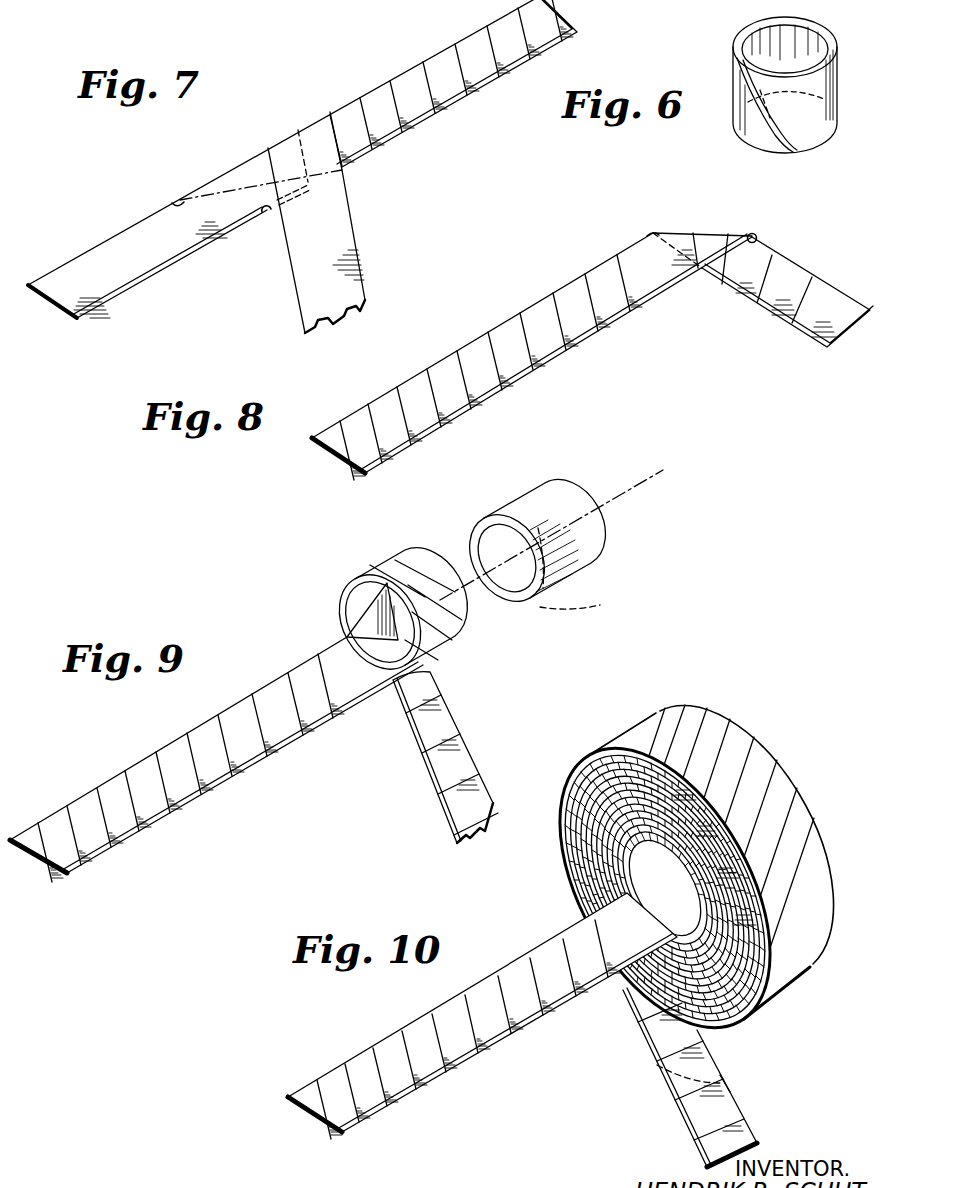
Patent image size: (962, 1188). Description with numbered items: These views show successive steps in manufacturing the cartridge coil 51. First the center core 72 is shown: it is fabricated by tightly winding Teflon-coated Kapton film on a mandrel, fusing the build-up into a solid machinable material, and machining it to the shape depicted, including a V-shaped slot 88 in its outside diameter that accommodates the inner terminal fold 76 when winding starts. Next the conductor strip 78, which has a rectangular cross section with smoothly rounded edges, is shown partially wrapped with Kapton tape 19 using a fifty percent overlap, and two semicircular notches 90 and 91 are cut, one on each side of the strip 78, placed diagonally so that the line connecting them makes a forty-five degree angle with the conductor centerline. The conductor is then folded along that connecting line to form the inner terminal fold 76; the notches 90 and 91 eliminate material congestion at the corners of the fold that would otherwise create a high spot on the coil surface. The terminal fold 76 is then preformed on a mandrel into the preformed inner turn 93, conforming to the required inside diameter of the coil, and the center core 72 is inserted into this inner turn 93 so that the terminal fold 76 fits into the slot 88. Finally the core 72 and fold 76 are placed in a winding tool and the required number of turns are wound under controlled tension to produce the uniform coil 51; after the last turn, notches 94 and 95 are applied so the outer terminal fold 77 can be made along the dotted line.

In FIG. 7, the Kapton tape 19 is at (335, 242).
In FIG. 10, the cartridge coil 51 is at (578, 796).
In FIG. 6, the center core 72 is at (752, 19).
In FIG. 9, the center core 72 is at (526, 474).
In FIG. 10, the center core 72 is at (678, 909).
In FIG. 8, the inner terminal fold 76 is at (714, 223).
In FIG. 9, the inner terminal fold 76 is at (373, 673).
In FIG. 10, the inner terminal fold 76 is at (617, 924).
In FIG. 10, the outer terminal fold 77 is at (692, 1080).
In FIG. 7, the conductor strip 78 is at (122, 284).
In FIG. 8, the conductor strip 78 is at (336, 460).
In FIG. 9, the conductor strip 78 is at (40, 861).
In FIG. 10, the conductor strip 78 is at (308, 1122).
In FIG. 6, the V-shaped slot 88 is at (760, 124).
In FIG. 9, the V-shaped slot 88 is at (570, 604).
In FIG. 7, the semicircular notch 90 is at (270, 217).
In FIG. 8, the semicircular notch 90 is at (758, 238).
In FIG. 7, the semicircular notch 91 is at (178, 198).
In FIG. 8, the semicircular notch 91 is at (654, 230).
In FIG. 9, the preformed inner turn 93 is at (340, 604).
In FIG. 10, the notch 94 is at (651, 1068).
In FIG. 10, the notch 95 is at (738, 1088).